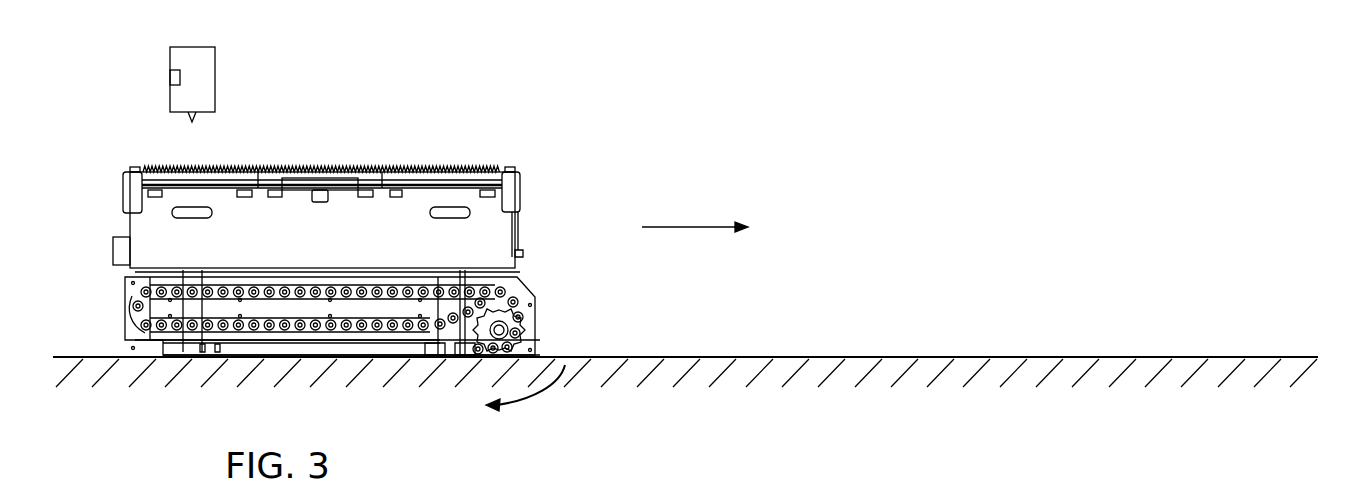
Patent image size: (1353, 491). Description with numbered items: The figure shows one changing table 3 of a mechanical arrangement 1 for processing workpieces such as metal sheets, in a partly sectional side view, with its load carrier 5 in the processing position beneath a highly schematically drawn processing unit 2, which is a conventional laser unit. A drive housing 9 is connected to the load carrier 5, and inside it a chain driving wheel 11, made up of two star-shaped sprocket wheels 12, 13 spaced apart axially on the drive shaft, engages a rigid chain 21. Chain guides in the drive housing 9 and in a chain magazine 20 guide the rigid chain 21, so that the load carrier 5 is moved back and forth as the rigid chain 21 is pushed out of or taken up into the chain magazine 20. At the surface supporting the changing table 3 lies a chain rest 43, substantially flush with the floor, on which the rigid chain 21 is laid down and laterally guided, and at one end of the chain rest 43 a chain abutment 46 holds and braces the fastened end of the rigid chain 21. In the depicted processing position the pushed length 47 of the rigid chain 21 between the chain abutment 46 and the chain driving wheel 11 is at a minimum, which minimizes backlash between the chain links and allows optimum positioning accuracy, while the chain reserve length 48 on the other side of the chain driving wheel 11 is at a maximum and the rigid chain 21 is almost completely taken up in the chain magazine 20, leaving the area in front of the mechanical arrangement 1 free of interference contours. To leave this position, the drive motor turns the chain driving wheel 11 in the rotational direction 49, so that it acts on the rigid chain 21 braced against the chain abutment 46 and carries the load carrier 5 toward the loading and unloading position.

The mechanical arrangement 1 is at (383, 56).
The processing unit 2 is at (206, 91).
The changing table 3 is at (547, 148).
The load carrier 5 is at (323, 243).
The drive housing 9 is at (520, 288).
The chain driving wheel 11 is at (499, 330).
The sprocket wheel 12 is at (499, 330).
The sprocket wheel 13 is at (499, 330).
The chain magazine 20 is at (162, 308).
The rigid chain 21 is at (237, 338).
The chain rest 43 is at (842, 356).
The chain abutment 46 is at (423, 354).
The pushed length 47 is at (468, 357).
The chain reserve length 48 is at (152, 291).
The rotational direction 49 is at (533, 398).